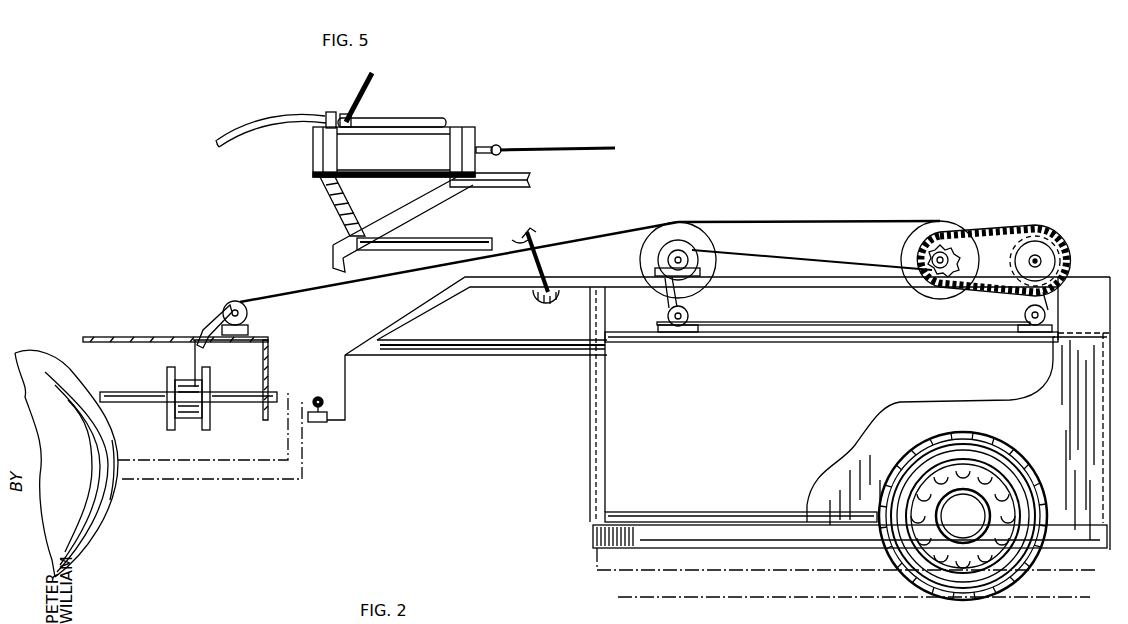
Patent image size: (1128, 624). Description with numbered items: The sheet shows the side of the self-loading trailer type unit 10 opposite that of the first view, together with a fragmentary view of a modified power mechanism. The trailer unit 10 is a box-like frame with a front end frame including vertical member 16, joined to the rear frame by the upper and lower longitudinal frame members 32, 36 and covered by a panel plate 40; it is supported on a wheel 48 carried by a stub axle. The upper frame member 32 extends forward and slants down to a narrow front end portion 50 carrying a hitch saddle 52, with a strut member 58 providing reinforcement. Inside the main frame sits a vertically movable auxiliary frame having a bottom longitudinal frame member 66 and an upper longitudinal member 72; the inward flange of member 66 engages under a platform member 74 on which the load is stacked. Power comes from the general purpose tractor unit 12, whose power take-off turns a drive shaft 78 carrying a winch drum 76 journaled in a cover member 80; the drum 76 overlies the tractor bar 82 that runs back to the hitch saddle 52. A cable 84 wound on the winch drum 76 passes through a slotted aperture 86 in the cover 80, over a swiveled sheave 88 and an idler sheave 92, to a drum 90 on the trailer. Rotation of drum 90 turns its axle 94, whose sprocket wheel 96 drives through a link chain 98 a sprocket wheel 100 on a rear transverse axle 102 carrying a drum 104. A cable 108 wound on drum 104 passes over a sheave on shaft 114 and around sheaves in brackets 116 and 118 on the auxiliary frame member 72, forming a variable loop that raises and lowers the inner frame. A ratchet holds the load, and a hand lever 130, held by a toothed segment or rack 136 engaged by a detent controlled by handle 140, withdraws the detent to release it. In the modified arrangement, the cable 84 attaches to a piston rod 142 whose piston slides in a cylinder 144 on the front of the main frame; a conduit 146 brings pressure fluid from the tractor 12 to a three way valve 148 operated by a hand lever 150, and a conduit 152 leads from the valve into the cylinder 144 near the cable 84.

In FIG. 2, the self-loading trailer type unit 10 is at (586, 461).
In FIG. 2, the general purpose tractor unit 12 is at (118, 520).
In FIG. 2, the vertical member 16 is at (590, 396).
In FIG. 5, the upper longitudinal frame member 32 is at (518, 187).
In FIG. 2, the upper longitudinal frame member 32 is at (790, 281).
In FIG. 2, the lower longitudinal frame member 36 is at (730, 512).
In FIG. 2, the panel plate 40 is at (968, 399).
In FIG. 2, the wheel 48 is at (914, 560).
In FIG. 2, the narrow front end portion 50 is at (346, 419).
In FIG. 2, the hitch saddle 52 is at (318, 395).
In FIG. 5, the strut member 58 is at (455, 238).
In FIG. 2, the strut member 58 is at (496, 341).
In FIG. 2, the bottom longitudinal frame member 66 is at (592, 539).
In FIG. 2, the upper longitudinal member 72 is at (769, 334).
In FIG. 2, the platform member 74 is at (716, 560).
In FIG. 2, the winch drum 76 is at (210, 372).
In FIG. 2, the drive shaft 78 is at (240, 402).
In FIG. 2, the cover member 80 is at (131, 336).
In FIG. 2, the tractor bar 82 is at (248, 472).
In FIG. 5, the cable 84 is at (603, 142).
In FIG. 2, the cable 84 is at (815, 224).
In FIG. 2, the slotted aperture 86 is at (192, 336).
In FIG. 2, the swiveled sheave 88 is at (248, 317).
In FIG. 2, the drum 90 is at (942, 208).
In FIG. 2, the idler sheave 92 is at (698, 208).
In FIG. 2, the axle 94 is at (930, 260).
In FIG. 2, the sprocket wheel 96 is at (975, 257).
In FIG. 2, the link chain 98 is at (975, 232).
In FIG. 2, the sprocket wheel 100 is at (1018, 228).
In FIG. 2, the axle 102 is at (1041, 261).
In FIG. 2, the drum 104 is at (1060, 237).
In FIG. 2, the cable 108 is at (891, 322).
In FIG. 2, the shaft 114 is at (650, 262).
In FIG. 2, the bracket 116 is at (1025, 317).
In FIG. 2, the bracket 118 is at (666, 316).
In FIG. 2, the hand lever 130 is at (532, 232).
In FIG. 2, the toothed segment or rack 136 is at (533, 299).
In FIG. 2, the handle 140 is at (513, 242).
In FIG. 5, the piston rod 142 is at (488, 144).
In FIG. 5, the cylinder 144 is at (313, 160).
In FIG. 5, the conduit 146 is at (280, 115).
In FIG. 5, the three way valve 148 is at (343, 115).
In FIG. 5, the hand lever 150 is at (370, 95).
In FIG. 5, the conduit 152 is at (425, 118).